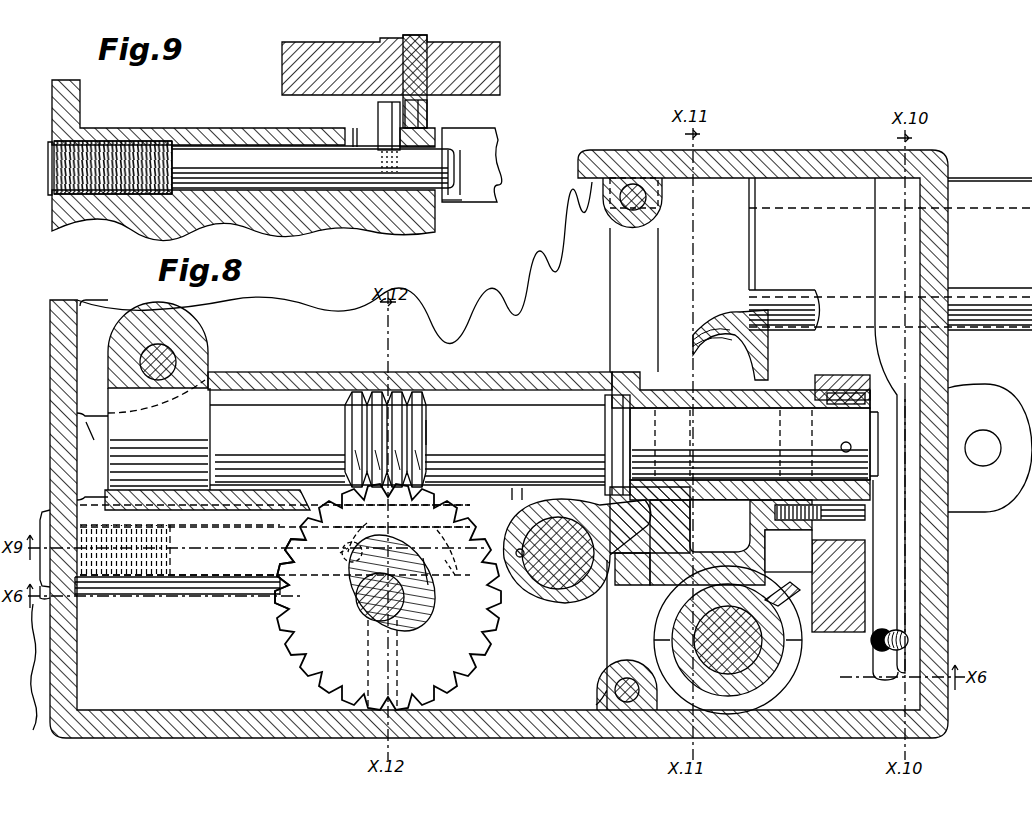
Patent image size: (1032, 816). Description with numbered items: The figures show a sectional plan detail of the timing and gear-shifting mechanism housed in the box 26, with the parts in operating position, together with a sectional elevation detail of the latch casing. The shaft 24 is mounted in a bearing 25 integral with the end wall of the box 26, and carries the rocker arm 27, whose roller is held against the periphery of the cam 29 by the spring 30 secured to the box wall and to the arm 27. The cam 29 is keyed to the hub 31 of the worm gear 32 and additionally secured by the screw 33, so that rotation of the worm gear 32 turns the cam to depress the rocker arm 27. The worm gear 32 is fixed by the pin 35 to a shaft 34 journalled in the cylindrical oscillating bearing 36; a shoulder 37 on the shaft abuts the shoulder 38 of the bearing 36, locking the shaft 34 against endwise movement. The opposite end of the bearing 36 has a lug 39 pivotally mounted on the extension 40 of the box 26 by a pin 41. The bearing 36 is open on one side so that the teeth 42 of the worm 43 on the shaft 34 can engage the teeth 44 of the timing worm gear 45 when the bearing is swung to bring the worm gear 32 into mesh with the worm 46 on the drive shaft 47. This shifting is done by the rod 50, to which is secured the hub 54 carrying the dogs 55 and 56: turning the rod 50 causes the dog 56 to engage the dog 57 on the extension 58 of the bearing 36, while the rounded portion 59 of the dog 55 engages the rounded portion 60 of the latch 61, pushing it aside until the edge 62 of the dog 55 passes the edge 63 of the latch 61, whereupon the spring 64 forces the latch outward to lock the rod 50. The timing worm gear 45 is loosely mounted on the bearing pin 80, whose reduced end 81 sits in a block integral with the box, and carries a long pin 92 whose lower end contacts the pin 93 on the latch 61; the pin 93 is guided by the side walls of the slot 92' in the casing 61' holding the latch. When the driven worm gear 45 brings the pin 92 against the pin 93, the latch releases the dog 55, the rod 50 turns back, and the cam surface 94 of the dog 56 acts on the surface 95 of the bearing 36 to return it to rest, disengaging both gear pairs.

In FIG. 8, the shaft 24 is at (976, 207).
In FIG. 8, the bearing 25 is at (1008, 178).
In FIG. 9, the box 26 is at (76, 98).
In FIG. 8, the box 26 is at (62, 438).
In FIG. 8, the rocker arm 27 is at (816, 318).
In FIG. 8, the cam 29 is at (836, 375).
In FIG. 8, the spring 30 is at (876, 646).
In FIG. 8, the hub 31 is at (841, 410).
In FIG. 8, the worm gear 32 is at (722, 312).
In FIG. 8, the screw 33 is at (808, 558).
In FIG. 8, the shaft 34 is at (750, 444).
In FIG. 8, the pin 35 is at (846, 442).
In FIG. 8, the cylindrical oscillating bearing 36 is at (500, 372).
In FIG. 8, the shoulder 37 is at (642, 445).
In FIG. 8, the shoulder 38 is at (624, 372).
In FIG. 8, the lug 39 is at (194, 340).
In FIG. 8, the extension 40 is at (92, 400).
In FIG. 8, the pin 41 is at (176, 362).
In FIG. 8, the teeth 42 is at (367, 392).
In FIG. 8, the worm 43 is at (433, 436).
In FIG. 8, the teeth 44 is at (282, 640).
In FIG. 9, the timing worm gear 45 is at (490, 70).
In FIG. 8, the timing worm gear 45 is at (388, 597).
In FIG. 8, the worm 46 is at (784, 676).
In FIG. 8, the drive shaft 47 is at (790, 580).
In FIG. 8, the rod 50 is at (548, 590).
In FIG. 8, the hub 54 is at (580, 603).
In FIG. 9, the dog 55 is at (500, 142).
In FIG. 8, the dog 55 is at (530, 500).
In FIG. 8, the dog 56 is at (622, 528).
In FIG. 8, the dog 57 is at (630, 585).
In FIG. 8, the extension 58 is at (690, 530).
In FIG. 8, the rounded portion 59 is at (436, 530).
In FIG. 9, the rounded portion 60 is at (453, 202).
In FIG. 8, the rounded portion 60 is at (450, 574).
In FIG. 9, the latch 61 is at (313, 168).
In FIG. 8, the latch 61 is at (177, 598).
In FIG. 9, the casing 61' is at (303, 124).
In FIG. 8, the casing 61' is at (180, 575).
In FIG. 9, the edge 62 is at (432, 128).
In FIG. 9, the edge 63 is at (461, 166).
In FIG. 9, the spring 64 is at (150, 141).
In FIG. 8, the spring 64 is at (138, 578).
In FIG. 8, the bearing pin 80 is at (352, 602).
In FIG. 8, the reduced end 81 is at (360, 610).
In FIG. 9, the pin 92 is at (453, 70).
In FIG. 8, the pin 92 is at (440, 586).
In FIG. 9, the slot 92' is at (346, 146).
In FIG. 8, the slot 92' is at (327, 559).
In FIG. 9, the pin 93 is at (378, 116).
In FIG. 8, the pin 93 is at (370, 540).
In FIG. 8, the cam surface 94 is at (648, 492).
In FIG. 8, the surface 95 is at (517, 497).